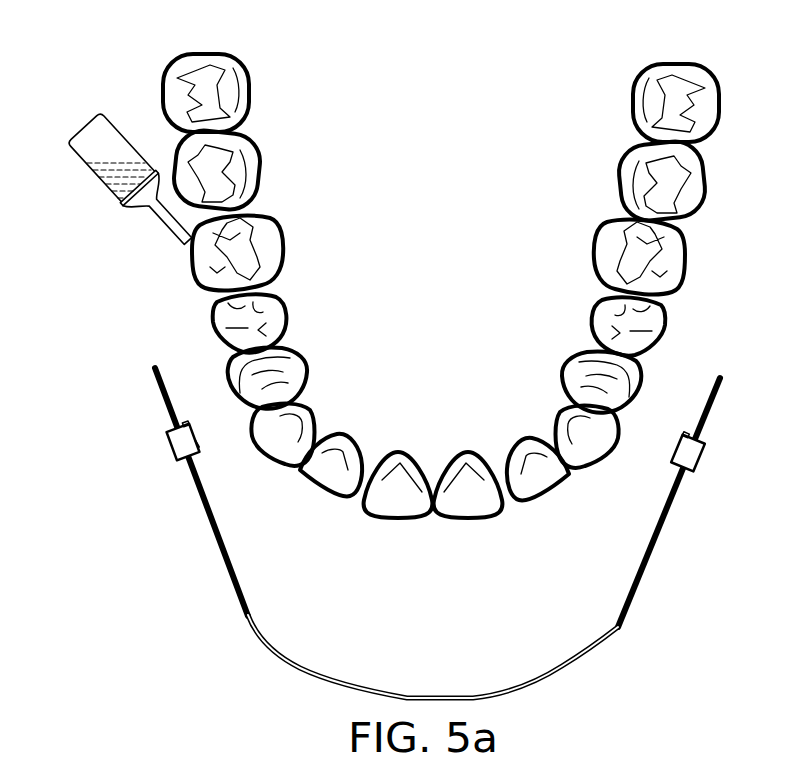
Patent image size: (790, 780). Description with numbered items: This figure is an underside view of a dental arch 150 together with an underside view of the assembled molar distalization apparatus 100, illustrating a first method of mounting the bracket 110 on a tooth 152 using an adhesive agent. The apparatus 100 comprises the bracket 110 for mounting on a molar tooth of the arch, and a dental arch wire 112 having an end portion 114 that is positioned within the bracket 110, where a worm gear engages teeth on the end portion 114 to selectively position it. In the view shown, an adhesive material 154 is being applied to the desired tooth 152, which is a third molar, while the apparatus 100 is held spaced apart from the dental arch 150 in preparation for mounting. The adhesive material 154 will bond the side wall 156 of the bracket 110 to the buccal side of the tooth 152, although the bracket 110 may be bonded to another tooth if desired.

The apparatus 100 is at (184, 619).
The bracket 110 is at (170, 454).
The dental arch wire 112 is at (302, 665).
The end portion 114 is at (226, 562).
The dental arch 150 is at (714, 56).
The tooth 152 is at (276, 216).
The adhesive material 154 is at (95, 179).
The side wall 156 is at (199, 444).